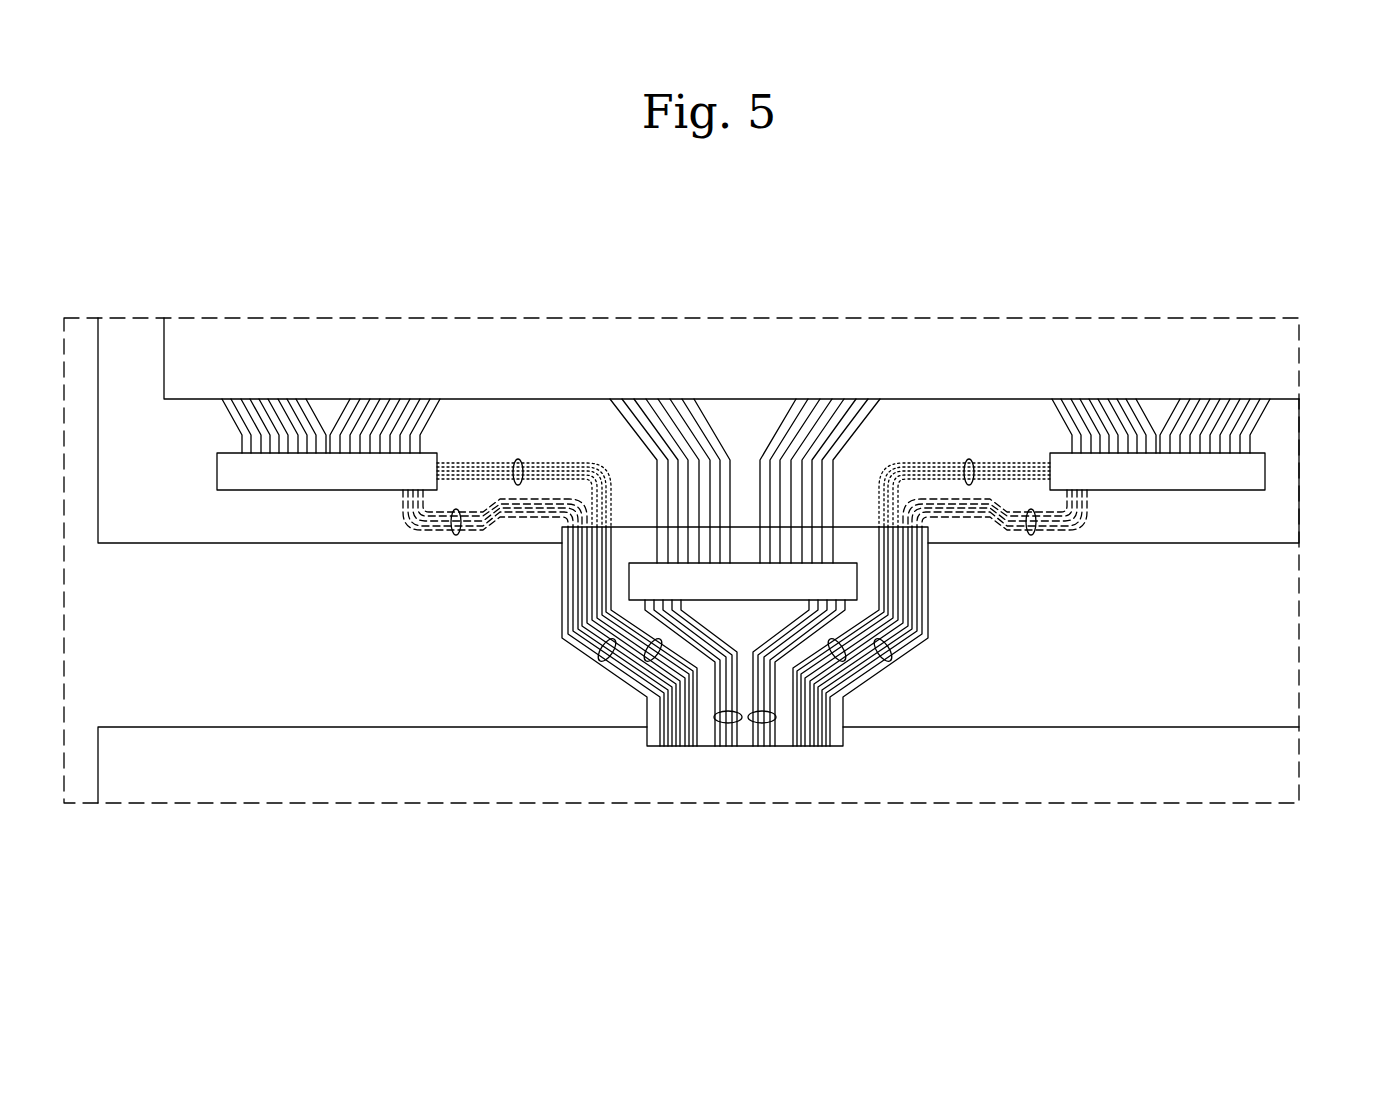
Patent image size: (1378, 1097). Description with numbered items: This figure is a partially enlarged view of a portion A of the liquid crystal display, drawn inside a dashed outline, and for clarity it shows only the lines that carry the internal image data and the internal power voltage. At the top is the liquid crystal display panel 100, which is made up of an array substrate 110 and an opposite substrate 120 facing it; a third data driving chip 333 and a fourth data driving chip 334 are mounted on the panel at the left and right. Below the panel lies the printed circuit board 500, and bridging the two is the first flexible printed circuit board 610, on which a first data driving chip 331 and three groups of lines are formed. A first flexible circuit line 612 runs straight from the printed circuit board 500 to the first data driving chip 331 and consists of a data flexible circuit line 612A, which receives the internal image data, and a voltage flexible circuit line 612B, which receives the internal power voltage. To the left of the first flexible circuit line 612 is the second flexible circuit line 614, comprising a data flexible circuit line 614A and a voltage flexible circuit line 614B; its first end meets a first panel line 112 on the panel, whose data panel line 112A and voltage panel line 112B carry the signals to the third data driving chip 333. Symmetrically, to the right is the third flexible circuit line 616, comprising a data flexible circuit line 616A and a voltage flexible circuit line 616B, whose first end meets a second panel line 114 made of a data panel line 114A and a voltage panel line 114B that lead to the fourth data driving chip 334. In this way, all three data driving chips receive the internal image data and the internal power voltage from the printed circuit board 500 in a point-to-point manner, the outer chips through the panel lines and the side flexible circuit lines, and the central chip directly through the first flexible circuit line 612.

The liquid crystal display panel 100 is at (684, 376).
The array substrate 110 is at (97, 335).
The opposite substrate 120 is at (716, 327).
The third data driving chip 333 is at (250, 490).
The fourth data driving chip 334 is at (1222, 490).
The first data driving chip 331 is at (742, 600).
The first flexible printed circuit board 610 is at (627, 525).
The first flexible circuit line 612 is at (745, 749).
The data flexible circuit line 612A is at (700, 746).
The voltage flexible circuit line 612B is at (796, 725).
The second flexible circuit line 614 is at (560, 636).
The data flexible circuit line 614A is at (600, 661).
The voltage flexible circuit line 614B is at (649, 662).
The third flexible circuit line 616 is at (927, 636).
The data flexible circuit line 616A is at (890, 661).
The voltage flexible circuit line 616B is at (841, 662).
The first panel line 112 is at (507, 557).
The data panel line 112A is at (548, 612).
The voltage panel line 112B is at (518, 485).
The second panel line 114 is at (983, 557).
The data panel line 114A is at (938, 612).
The voltage panel line 114B is at (969, 485).
The printed circuit board 500 is at (1265, 727).
The portion A is at (1300, 483).